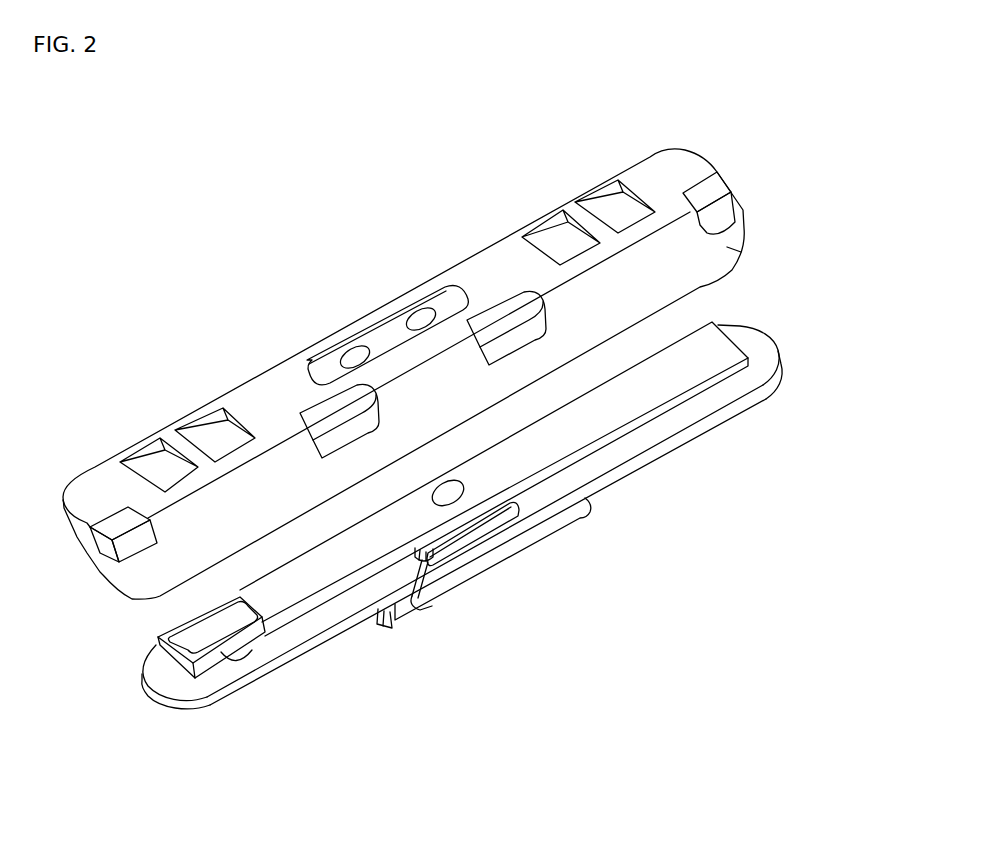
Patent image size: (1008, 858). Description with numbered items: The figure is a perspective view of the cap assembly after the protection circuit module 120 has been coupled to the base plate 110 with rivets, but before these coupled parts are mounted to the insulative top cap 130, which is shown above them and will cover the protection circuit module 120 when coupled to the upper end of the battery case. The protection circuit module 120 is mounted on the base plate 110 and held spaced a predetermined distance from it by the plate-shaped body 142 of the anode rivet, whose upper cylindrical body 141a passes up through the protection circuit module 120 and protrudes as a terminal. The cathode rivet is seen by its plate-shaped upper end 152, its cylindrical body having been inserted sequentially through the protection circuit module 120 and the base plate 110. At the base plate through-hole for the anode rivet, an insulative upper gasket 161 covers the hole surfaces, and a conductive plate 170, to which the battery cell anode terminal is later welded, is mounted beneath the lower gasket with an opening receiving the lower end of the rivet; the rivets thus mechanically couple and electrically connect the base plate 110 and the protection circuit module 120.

The base plate 110 is at (777, 347).
The protection circuit module 120 is at (727, 331).
The top cap 130 is at (710, 163).
The upper cylindrical body 141a is at (450, 487).
The plate-shaped body 142 is at (433, 607).
The plate-shaped upper end 152 is at (183, 622).
The upper gasket 161 is at (465, 545).
The conductive plate 170 is at (519, 543).